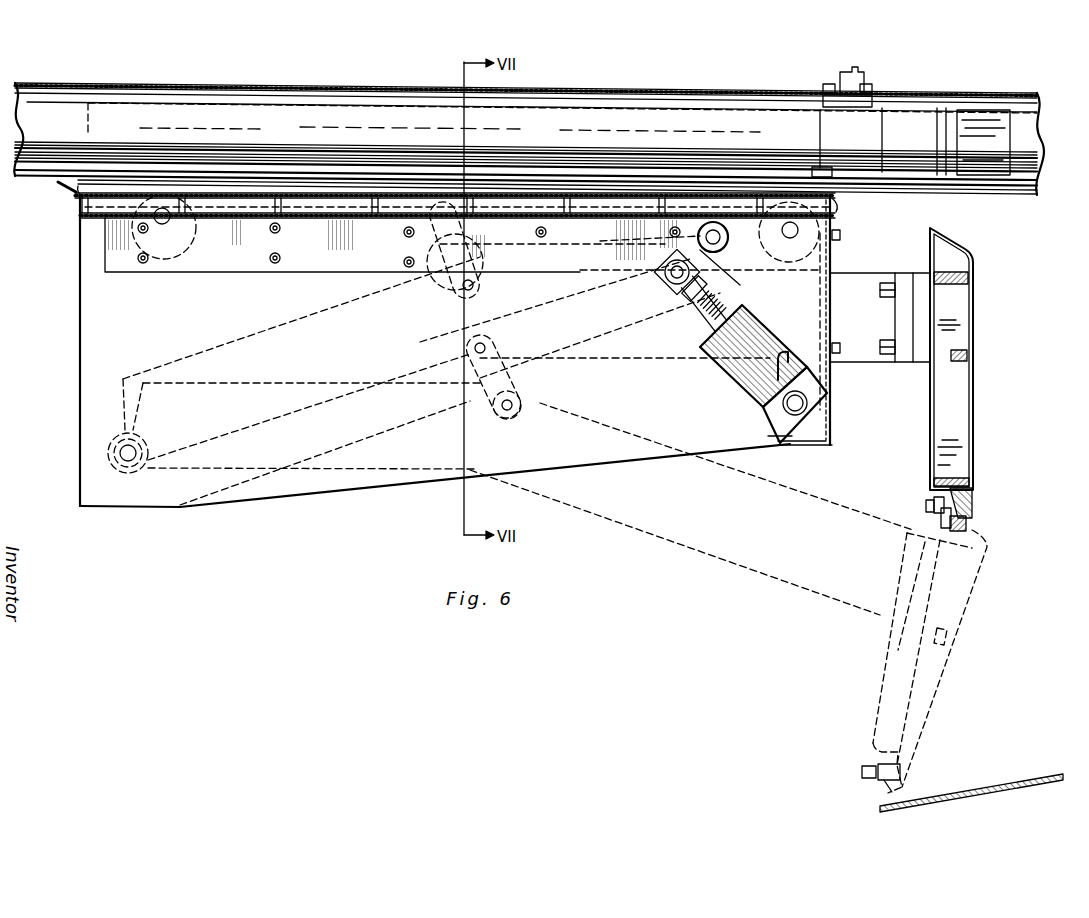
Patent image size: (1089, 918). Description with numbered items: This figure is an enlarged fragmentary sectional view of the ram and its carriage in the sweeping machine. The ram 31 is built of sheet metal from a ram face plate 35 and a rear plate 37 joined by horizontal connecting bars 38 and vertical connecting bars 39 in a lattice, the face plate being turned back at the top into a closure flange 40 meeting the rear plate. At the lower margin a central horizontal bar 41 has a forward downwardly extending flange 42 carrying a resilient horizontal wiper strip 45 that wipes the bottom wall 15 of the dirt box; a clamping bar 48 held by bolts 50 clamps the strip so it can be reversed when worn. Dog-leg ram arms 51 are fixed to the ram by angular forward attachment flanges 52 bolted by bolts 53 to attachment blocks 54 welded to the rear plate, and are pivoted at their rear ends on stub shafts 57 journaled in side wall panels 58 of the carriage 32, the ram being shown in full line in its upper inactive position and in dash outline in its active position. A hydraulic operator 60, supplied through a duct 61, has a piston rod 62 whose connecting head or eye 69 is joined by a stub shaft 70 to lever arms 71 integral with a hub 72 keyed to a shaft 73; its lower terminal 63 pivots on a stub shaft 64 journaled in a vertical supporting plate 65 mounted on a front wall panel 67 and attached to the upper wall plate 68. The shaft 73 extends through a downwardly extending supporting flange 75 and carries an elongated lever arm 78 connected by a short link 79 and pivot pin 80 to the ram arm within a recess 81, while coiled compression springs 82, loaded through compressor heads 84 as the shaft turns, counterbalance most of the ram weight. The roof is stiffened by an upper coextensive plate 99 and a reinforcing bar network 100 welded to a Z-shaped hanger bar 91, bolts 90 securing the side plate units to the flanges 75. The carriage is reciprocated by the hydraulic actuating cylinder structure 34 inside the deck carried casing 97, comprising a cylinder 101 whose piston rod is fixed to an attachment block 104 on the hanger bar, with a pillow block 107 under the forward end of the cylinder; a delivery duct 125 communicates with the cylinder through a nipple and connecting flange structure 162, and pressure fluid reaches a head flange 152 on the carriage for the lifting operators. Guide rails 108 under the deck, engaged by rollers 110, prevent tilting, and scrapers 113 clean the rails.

The bottom wall 15 is at (1000, 783).
The ram 31 is at (977, 435).
The carriage 32 is at (337, 493).
The hydraulic actuating cylinder structure 34 is at (224, 100).
The ram face plate 35 is at (977, 393).
The rear plate 37 is at (927, 402).
The horizontal connecting bars 38 is at (953, 283).
The vertical connecting bars 39 is at (958, 322).
The closure flange 40 is at (953, 237).
The central horizontal bar 41 is at (972, 487).
The forward downwardly extending flange 42 is at (973, 502).
The horizontal wiper strip 45 is at (970, 523).
The clamping bar 48 is at (943, 517).
The bolts 50 is at (931, 500).
The ram arms 51 is at (860, 350).
The angular forward attachment flanges 52 is at (900, 357).
The bolts 53 is at (883, 287).
The attachment blocks 54 is at (922, 290).
The stub shafts 57 is at (128, 453).
The side wall panel 58 is at (262, 470).
The hydraulic operators 60 is at (735, 372).
The hydraulic fluid supply and exhaust duct 61 is at (783, 362).
The piston rod 62 is at (702, 326).
The attachment boss 63 is at (778, 423).
The stub shaft 64 is at (812, 407).
The vertical supporting plate 65 is at (764, 446).
The front wall panel 67 is at (830, 423).
The upper wall plate 68 is at (627, 217).
The connecting head 69 is at (686, 300).
The stub shaft 70 is at (664, 274).
The lever arms 71 is at (660, 242).
The hub 72 is at (722, 245).
The shaft 73 is at (718, 222).
The supporting flange 75 is at (355, 262).
The elongated lever arm 78 is at (548, 262).
The short link 79 is at (440, 245).
The pivot pin 80 is at (465, 292).
The recess 81 is at (455, 292).
The coiled compression springs 82 is at (693, 350).
The compressor blocks 84 is at (660, 303).
The bolts 90 is at (272, 230).
The hanger bar 91 is at (88, 132).
The casing 97 is at (862, 88).
The upper coextensive plate 99 is at (250, 197).
The reinforcing bar network 100 is at (388, 197).
The cylinder 101 is at (77, 102).
The attachment block 104 is at (980, 122).
The pillow block 107 is at (904, 170).
The rails 108 is at (116, 178).
The rollers 110 is at (168, 197).
The scrapers 113 is at (62, 187).
The delivery duct 125 is at (853, 65).
The head flange 152 is at (822, 172).
The nipple and connecting flange structure 162 is at (823, 88).